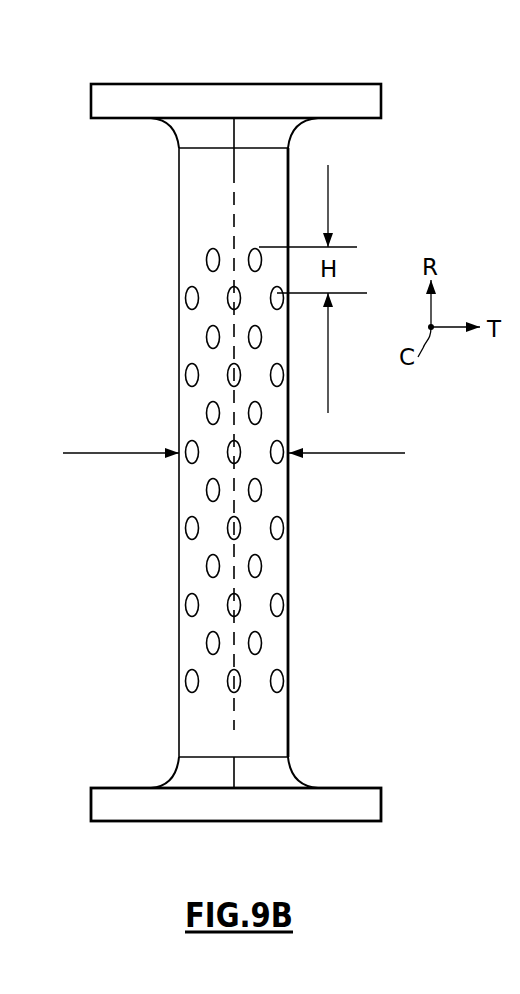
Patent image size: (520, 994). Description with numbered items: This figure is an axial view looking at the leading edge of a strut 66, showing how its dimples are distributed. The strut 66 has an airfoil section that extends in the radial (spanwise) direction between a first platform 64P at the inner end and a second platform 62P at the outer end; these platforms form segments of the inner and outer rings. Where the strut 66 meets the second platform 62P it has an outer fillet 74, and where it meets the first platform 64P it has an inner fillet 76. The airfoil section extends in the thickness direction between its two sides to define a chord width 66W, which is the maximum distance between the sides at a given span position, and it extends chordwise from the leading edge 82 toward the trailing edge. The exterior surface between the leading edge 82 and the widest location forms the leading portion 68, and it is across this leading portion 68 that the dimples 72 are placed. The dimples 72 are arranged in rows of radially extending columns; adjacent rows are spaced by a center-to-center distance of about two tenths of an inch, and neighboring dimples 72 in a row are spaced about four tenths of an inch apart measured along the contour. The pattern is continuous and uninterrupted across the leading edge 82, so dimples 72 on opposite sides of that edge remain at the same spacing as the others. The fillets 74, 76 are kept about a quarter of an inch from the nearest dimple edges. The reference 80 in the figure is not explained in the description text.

The second platform 62P is at (176, 84).
The first platform 64P is at (362, 822).
The strut 66 is at (179, 483).
The chord width 66W is at (360, 453).
The leading portion 68 is at (197, 730).
The dimples 72 is at (282, 679).
The outer fillet 74 is at (164, 133).
The inner fillet 76 is at (297, 778).
The leading portion / centerline 80 is at (234, 168).
The leading edge 82 is at (234, 218).